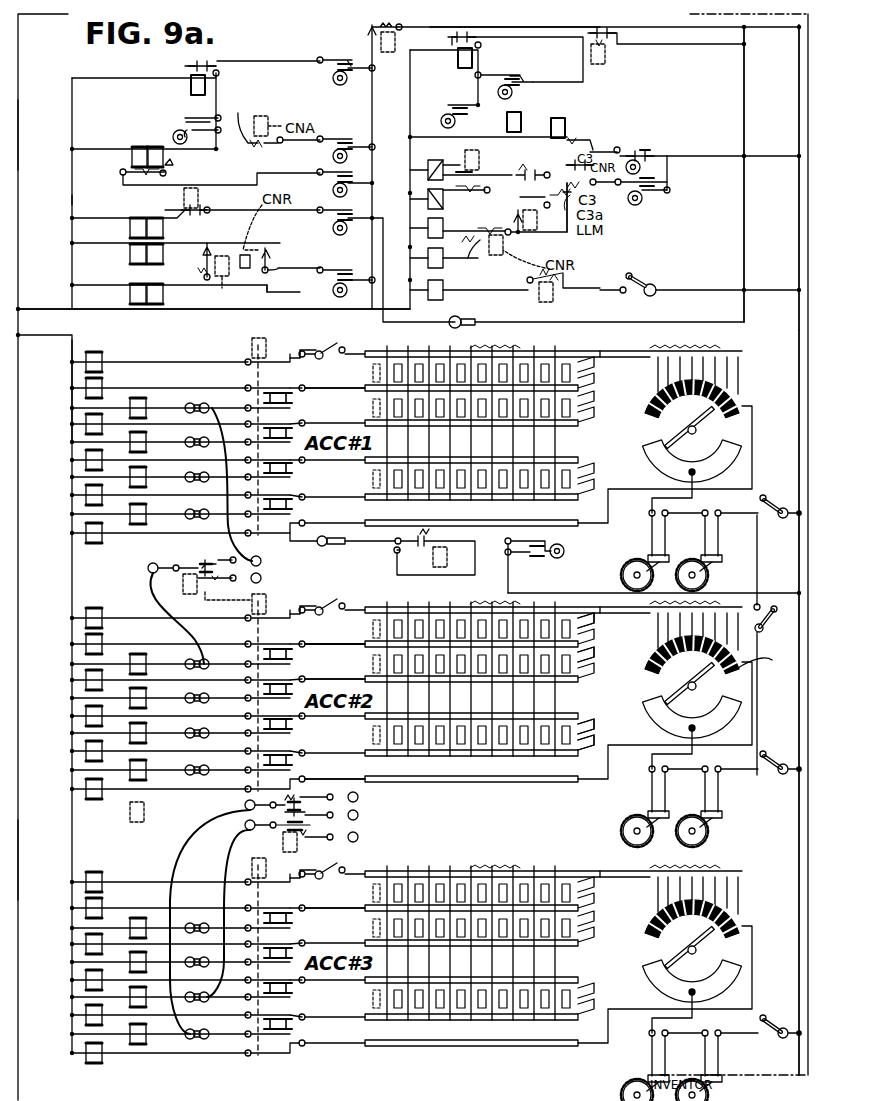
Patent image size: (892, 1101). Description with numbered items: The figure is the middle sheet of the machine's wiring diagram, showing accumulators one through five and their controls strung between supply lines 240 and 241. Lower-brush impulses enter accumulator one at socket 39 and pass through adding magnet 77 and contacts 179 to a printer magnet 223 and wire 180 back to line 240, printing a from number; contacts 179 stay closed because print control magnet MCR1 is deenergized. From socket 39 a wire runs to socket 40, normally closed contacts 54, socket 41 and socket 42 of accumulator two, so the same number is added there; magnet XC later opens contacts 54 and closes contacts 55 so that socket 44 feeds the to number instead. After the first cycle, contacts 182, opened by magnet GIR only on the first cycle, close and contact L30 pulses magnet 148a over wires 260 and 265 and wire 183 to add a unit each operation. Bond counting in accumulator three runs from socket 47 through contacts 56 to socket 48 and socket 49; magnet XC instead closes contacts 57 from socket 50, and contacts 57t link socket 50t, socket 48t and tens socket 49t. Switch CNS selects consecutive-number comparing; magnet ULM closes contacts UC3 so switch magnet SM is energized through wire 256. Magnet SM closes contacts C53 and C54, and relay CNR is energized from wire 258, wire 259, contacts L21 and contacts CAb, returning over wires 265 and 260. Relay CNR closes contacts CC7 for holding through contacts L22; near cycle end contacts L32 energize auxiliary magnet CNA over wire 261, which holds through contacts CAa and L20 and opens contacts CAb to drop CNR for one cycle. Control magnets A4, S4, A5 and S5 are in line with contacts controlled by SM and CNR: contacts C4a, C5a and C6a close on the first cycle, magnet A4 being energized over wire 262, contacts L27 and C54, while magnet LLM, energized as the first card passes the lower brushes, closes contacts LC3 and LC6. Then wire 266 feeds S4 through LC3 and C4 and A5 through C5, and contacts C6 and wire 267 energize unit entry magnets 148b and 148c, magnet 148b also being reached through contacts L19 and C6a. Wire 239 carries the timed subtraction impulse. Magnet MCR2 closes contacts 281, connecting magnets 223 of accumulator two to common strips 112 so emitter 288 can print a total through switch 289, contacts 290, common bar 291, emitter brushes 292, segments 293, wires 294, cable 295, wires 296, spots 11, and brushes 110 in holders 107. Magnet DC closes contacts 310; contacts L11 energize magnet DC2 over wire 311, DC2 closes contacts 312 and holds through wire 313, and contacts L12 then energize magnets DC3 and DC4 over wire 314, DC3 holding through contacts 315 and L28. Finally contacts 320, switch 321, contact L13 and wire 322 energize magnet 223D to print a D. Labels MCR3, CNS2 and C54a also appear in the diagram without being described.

The line 240 is at (18, 126).
The line 241 is at (799, 82).
The wire 258 is at (663, 31).
The wire 313 is at (539, 36).
The wire 183 is at (744, 68).
The wire 239 is at (799, 870).
The wire 261 is at (117, 84).
The wire 260 is at (47, 309).
The wire 265 is at (72, 201).
The wire 180 is at (72, 380).
The wire 259 is at (372, 100).
The wire 256 is at (262, 310).
The wire 267 is at (272, 292).
The wire 266 is at (568, 234).
The wire 262 is at (706, 154).
The contacts 182 is at (175, 212).
The unit adding magnet 148a is at (165, 229).
The carry magnet 148b is at (130, 261).
The unit entry magnet 148c is at (130, 297).
The contacts 312 is at (482, 44).
The contacts 310 is at (617, 48).
The wire 311 is at (410, 133).
The wire 314 is at (456, 144).
The contacts 315 is at (593, 142).
The print magnets 223 is at (102, 388).
The special type bar magnet 223D is at (86, 540).
The adding magnet 77 is at (145, 438).
The socket 39 is at (204, 406).
The socket 42 is at (205, 665).
The socket 49 is at (200, 1040).
The socket 49t is at (200, 1001).
The contacts 179 is at (288, 403).
The contacts 281 is at (280, 628).
The socket 41 is at (150, 565).
The contacts 54 is at (212, 562).
The socket 40 is at (262, 563).
The socket 44 is at (262, 580).
The contacts 55 is at (227, 599).
The switch 321 is at (330, 546).
The contacts 320 is at (414, 540).
The cable 295 is at (592, 598).
The wires 296 is at (540, 615).
The spots 11 is at (445, 622).
The common conducting strips 112 is at (365, 643).
The brushes 110 is at (590, 630).
The holders 107 is at (594, 657).
The emitter 288 is at (673, 681).
The emitter brushes 292 is at (692, 693).
The common bar 291 is at (658, 722).
The segments 293 is at (772, 662).
The wires 294 is at (752, 625).
The wire 322 is at (740, 596).
The switch 289 is at (783, 776).
The circuit breaking contacts 290 is at (670, 780).
The socket 48 is at (245, 805).
The socket 48t is at (245, 828).
The contacts 56 is at (298, 800).
The contacts 57 is at (290, 822).
The socket 47 is at (358, 798).
The socket 50 is at (358, 816).
The contacts 57t is at (358, 838).
The socket 50t is at (358, 842).
The auxiliary consecutive number relay magnet CNA is at (191, 87).
The contacts CAa is at (220, 73).
The contacts CAb is at (272, 121).
The contacts L32 is at (170, 126).
The consecutive number relay CNR is at (133, 155).
The contacts CC7 is at (173, 175).
The magnet GIR is at (207, 199).
The contacts LC6 is at (212, 243).
The contacts C6a is at (252, 258).
The contacts C6 is at (272, 250).
The magnet LLM is at (237, 292).
The contacts C53 is at (368, 25).
The switch magnet SM is at (452, 294).
The contacts L20 is at (335, 66).
The contacts L21 is at (358, 133).
The contacts L22 is at (359, 173).
The contact L30 is at (386, 261).
The contacts L19 is at (356, 276).
The adding control magnet A4 is at (410, 170).
The subtracting control magnet S4 is at (428, 192).
The adding control magnet A5 is at (428, 228).
The subtracting control magnet S5 is at (428, 258).
The contacts C4a is at (458, 168).
The contacts C54 is at (496, 176).
The contacts C4 is at (466, 199).
The contacts LC3 is at (542, 208).
The contacts C5 is at (480, 236).
The contacts C5a is at (461, 254).
The contacts UC3 is at (534, 280).
The magnet ULM is at (539, 295).
The switch CNS is at (647, 283).
The switch CNS2 is at (475, 323).
The contact C54a is at (564, 158).
The auxiliary duplicate magnet DC2 is at (458, 66).
The contacts L11 is at (522, 76).
The contacts L12 is at (442, 110).
The duplicate control magnet DC4 is at (522, 116).
The duplicate control magnet DC3 is at (568, 124).
The magnet DC is at (606, 66).
The contacts L28 is at (655, 152).
The contacts L27 is at (650, 198).
The print control magnet MCR1 is at (252, 344).
The print control magnet MCR2 is at (252, 612).
The relay coil MCR3 is at (252, 868).
The magnet XC is at (183, 588).
The contact L13 is at (530, 526).